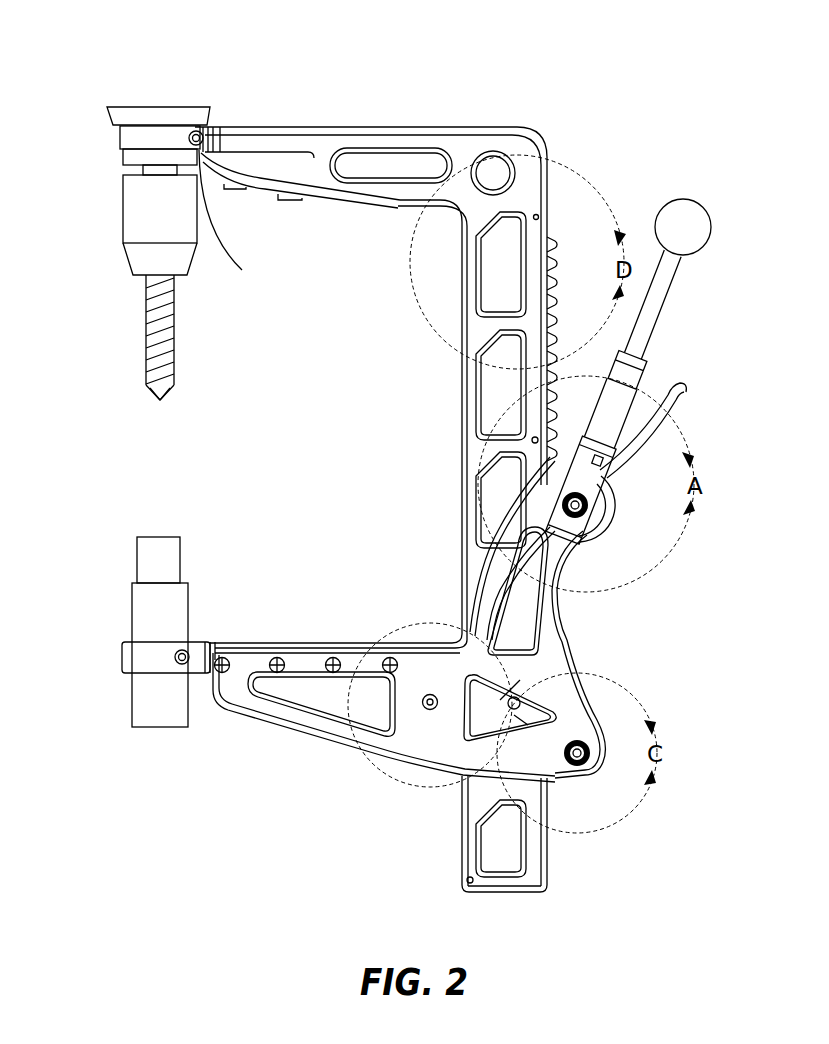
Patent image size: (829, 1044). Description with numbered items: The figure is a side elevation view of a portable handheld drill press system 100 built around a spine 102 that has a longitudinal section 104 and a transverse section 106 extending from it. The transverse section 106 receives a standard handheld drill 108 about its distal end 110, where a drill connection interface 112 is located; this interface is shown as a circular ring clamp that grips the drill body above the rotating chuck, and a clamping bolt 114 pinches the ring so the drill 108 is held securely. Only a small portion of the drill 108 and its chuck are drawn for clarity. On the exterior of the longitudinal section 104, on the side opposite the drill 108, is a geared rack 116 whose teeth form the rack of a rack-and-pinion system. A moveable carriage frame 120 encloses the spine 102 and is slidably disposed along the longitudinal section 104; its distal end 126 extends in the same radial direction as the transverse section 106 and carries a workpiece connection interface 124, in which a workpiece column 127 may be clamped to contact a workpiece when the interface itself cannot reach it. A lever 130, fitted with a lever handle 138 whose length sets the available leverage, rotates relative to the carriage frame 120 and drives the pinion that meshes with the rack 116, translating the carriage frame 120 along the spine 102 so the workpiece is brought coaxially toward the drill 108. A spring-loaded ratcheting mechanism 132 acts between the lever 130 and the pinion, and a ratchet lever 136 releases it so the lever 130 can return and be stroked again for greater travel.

The portable handheld drill press system 100 is at (398, 52).
The spine 102 is at (386, 210).
The longitudinal section 104 is at (462, 447).
The transverse section 106 is at (436, 148).
The handheld drill 108 is at (112, 219).
The distal end 110 is at (220, 101).
The drill connection interface 112 is at (120, 139).
The clamping bolt 114 is at (233, 223).
The geared rack 116 is at (556, 240).
The carriage frame 120 is at (280, 718).
The workpiece connection interface 124 is at (128, 657).
The distal end 126 is at (228, 624).
The workpiece column 127 is at (147, 623).
The lever 130 is at (726, 221).
The ratcheting mechanism 132 is at (624, 548).
The ratchet lever 136 is at (678, 393).
The lever handle 138 is at (660, 299).